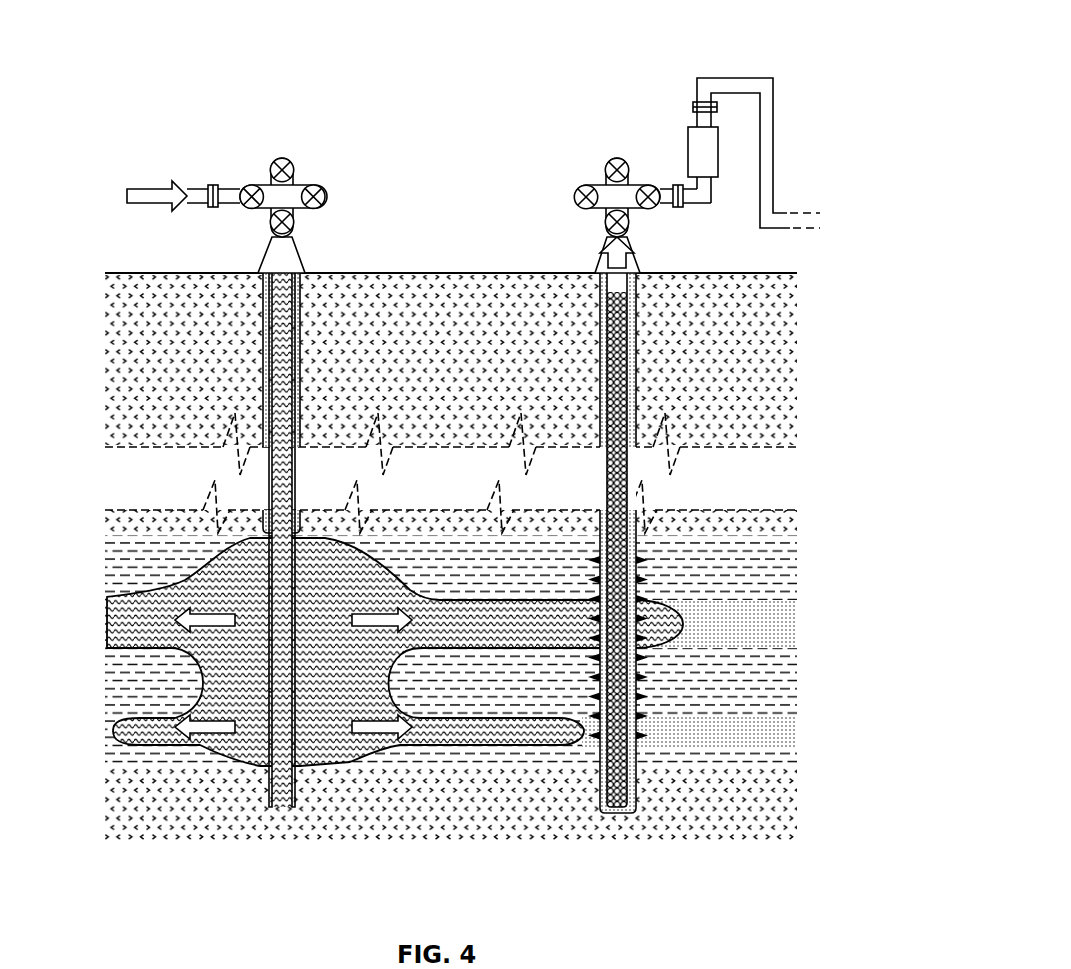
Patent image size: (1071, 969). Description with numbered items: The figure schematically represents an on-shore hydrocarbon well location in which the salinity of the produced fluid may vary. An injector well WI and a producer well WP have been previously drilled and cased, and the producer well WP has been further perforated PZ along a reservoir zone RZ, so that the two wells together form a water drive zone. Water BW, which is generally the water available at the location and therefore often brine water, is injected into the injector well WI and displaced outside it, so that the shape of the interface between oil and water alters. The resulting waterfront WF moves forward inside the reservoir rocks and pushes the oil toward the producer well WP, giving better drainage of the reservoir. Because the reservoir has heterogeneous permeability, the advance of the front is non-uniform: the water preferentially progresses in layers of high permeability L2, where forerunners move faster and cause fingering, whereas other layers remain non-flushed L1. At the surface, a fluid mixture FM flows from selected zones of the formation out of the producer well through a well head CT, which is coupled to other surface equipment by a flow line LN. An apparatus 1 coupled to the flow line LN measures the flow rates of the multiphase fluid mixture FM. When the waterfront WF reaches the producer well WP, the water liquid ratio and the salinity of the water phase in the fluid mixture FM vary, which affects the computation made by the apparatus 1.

The brine water BW is at (136, 194).
The injector well WI is at (254, 340).
The well head CT is at (592, 168).
The fluid mixture FM is at (615, 265).
The producer well WP is at (596, 389).
The flow line LN is at (747, 80).
The apparatus 1 is at (686, 143).
The reservoir zone RZ is at (75, 535).
The non-flushed layers L1 is at (119, 584).
The high permeability layers L2 is at (774, 720).
The waterfront WF is at (492, 664).
The perforations PZ is at (660, 677).